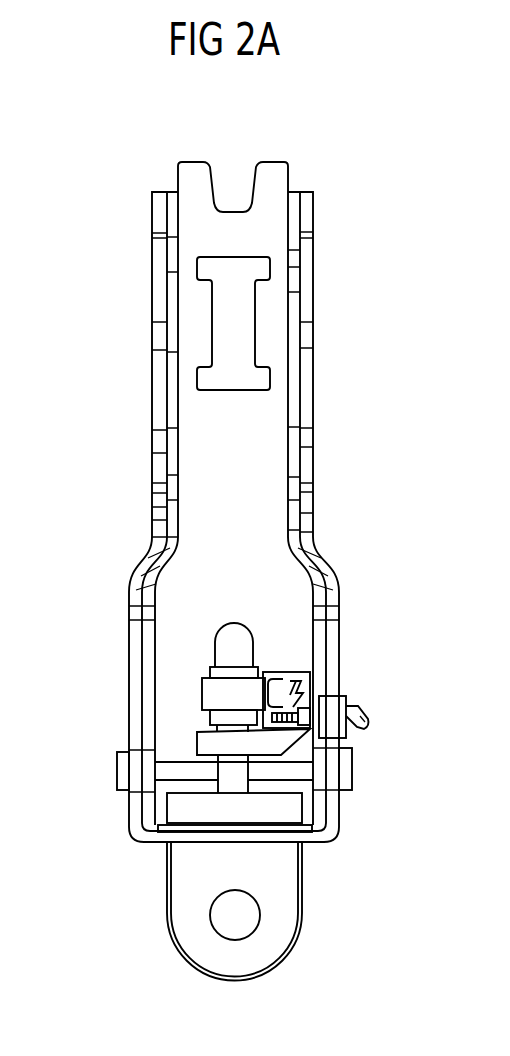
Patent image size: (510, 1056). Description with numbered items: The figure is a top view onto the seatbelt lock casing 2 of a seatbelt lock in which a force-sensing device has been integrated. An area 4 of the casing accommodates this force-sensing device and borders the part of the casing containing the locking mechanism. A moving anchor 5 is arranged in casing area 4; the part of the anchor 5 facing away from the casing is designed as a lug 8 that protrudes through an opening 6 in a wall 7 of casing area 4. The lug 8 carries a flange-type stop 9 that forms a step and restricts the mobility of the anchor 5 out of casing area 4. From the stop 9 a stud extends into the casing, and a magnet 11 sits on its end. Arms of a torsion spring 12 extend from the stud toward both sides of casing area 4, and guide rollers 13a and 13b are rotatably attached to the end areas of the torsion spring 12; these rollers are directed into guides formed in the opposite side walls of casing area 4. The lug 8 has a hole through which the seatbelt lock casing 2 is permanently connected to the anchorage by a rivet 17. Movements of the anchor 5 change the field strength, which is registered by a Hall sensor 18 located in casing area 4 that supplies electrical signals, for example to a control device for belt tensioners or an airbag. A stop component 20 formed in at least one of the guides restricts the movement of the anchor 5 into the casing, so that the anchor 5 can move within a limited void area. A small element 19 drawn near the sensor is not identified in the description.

The seatbelt lock casing 2 is at (165, 372).
The casing area 4 is at (253, 581).
The moving anchor 5 is at (188, 733).
The opening 6 is at (200, 845).
The wall 7 is at (165, 841).
The lug 8 is at (280, 925).
The flange-type stop 9 is at (165, 772).
The magnet 11 is at (213, 666).
The torsion spring 12 is at (305, 768).
The guide roller 13a is at (125, 780).
The guide roller 13b is at (343, 762).
The rivet 17 is at (227, 923).
The Hall sensor 18 is at (308, 684).
The contact pin 19 is at (368, 717).
The stop component 20 is at (347, 700).